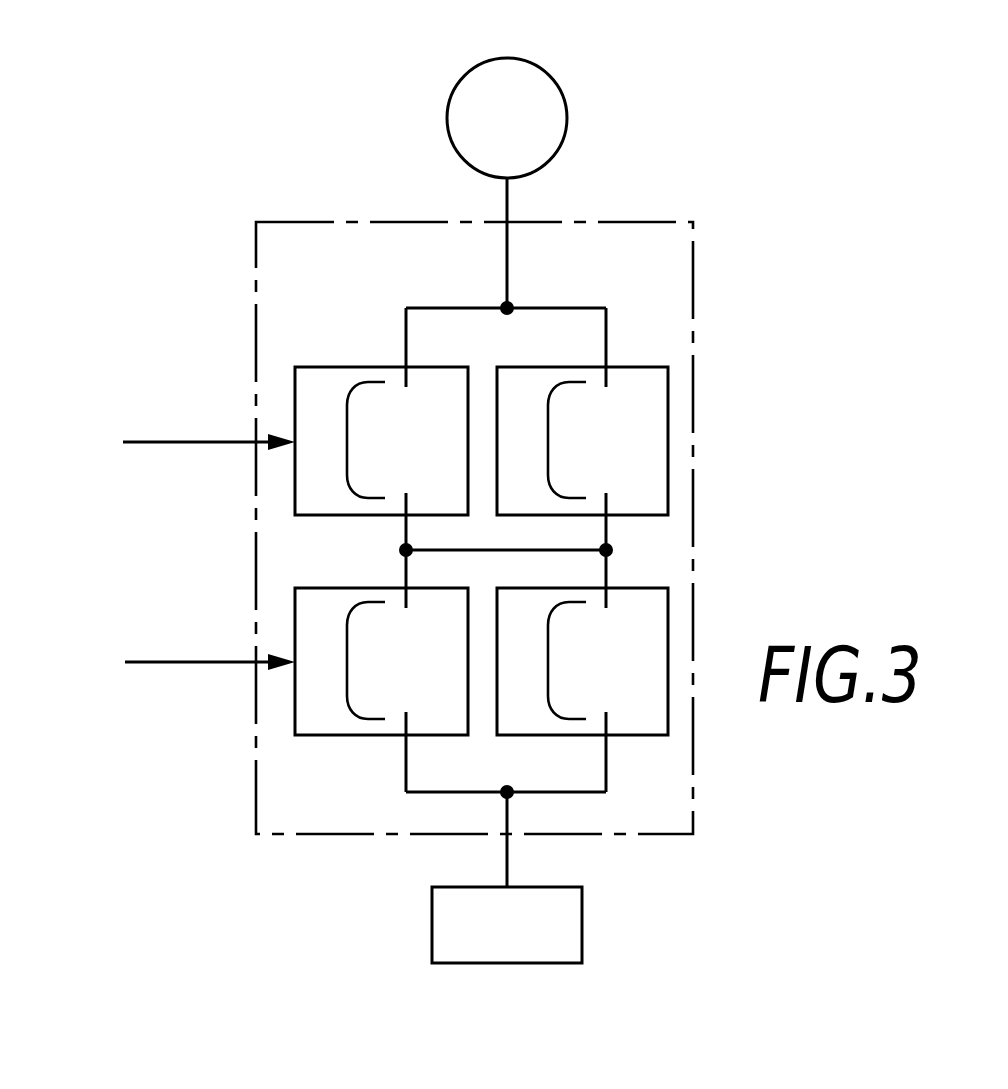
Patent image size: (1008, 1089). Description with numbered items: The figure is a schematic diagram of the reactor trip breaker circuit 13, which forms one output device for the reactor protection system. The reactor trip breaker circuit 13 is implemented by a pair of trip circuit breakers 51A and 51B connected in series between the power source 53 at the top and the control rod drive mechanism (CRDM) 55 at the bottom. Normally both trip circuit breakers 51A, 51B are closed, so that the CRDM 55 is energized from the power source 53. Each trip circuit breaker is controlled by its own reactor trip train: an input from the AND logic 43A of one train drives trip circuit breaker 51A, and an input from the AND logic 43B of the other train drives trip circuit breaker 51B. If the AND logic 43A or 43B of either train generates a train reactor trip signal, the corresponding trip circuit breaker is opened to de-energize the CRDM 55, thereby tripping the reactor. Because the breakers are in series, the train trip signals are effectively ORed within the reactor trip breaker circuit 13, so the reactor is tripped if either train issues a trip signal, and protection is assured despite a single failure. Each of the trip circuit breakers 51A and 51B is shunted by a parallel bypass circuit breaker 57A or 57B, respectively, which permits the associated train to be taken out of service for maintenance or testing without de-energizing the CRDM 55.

The reactor trip breaker circuit 13 is at (669, 181).
The power source 53 is at (552, 80).
The trip circuit breaker 51B is at (357, 365).
The bypass circuit breaker 57B is at (632, 367).
The trip circuit breaker 51A is at (358, 587).
The bypass circuit breaker 57A is at (625, 585).
The control rod drive mechanism (CRDM) 55 is at (583, 917).
The AND logic 43B is at (175, 417).
The AND logic 43A is at (182, 640).